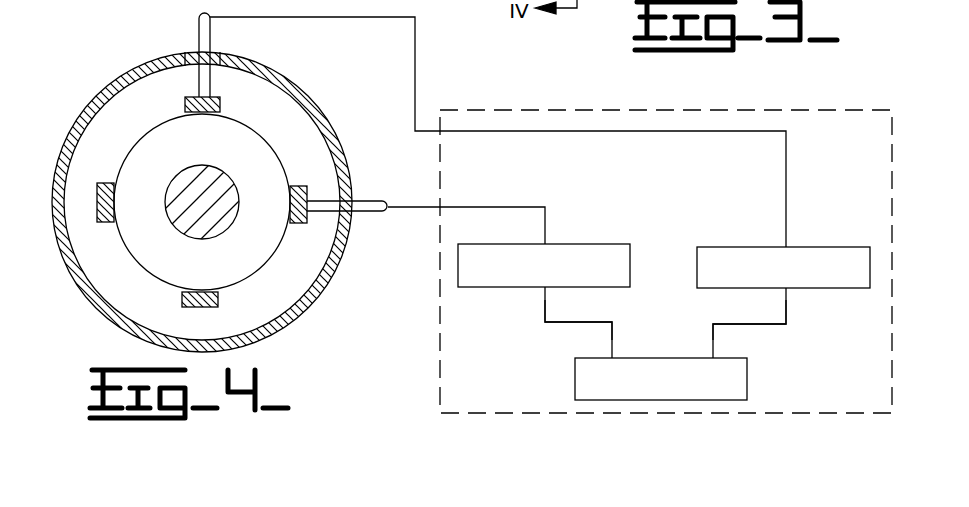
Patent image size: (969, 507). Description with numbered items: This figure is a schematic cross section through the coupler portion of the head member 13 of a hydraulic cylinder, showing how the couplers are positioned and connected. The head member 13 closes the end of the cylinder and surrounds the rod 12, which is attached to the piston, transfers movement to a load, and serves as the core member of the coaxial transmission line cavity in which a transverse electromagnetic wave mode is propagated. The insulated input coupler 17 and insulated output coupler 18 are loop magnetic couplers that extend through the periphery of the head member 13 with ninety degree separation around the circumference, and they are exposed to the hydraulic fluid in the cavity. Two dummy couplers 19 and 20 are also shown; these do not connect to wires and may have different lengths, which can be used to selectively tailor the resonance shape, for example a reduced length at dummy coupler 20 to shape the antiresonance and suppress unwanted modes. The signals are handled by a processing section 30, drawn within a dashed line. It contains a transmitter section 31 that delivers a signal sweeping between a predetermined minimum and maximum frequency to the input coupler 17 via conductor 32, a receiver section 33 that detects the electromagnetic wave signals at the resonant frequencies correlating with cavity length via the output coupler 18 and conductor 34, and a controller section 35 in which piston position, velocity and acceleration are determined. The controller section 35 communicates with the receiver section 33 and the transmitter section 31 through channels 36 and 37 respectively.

The rod 12 is at (189, 225).
The head member 13 is at (135, 71).
The input coupler 17 is at (198, 26).
The output coupler 18 is at (369, 202).
The dummy coupler 19 is at (218, 302).
The dummy coupler 20 is at (110, 183).
The processing section 30 is at (437, 299).
The transmitter section 31 is at (759, 247).
The conductor 32 is at (413, 75).
The receiver section 33 is at (570, 243).
The conductor 34 is at (500, 266).
The controller section 35 is at (667, 358).
The channel 36 is at (567, 325).
The channel 37 is at (760, 327).